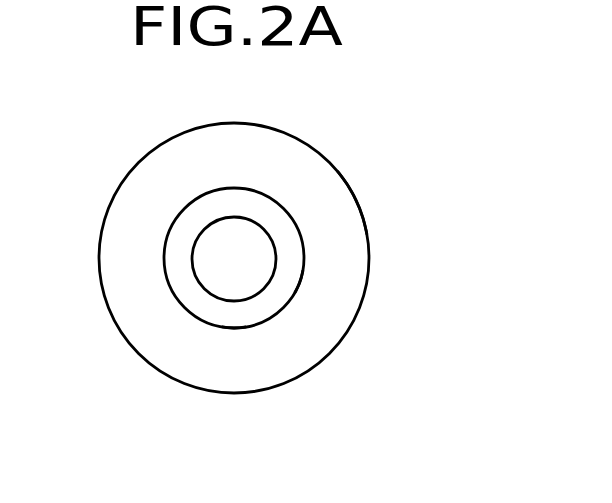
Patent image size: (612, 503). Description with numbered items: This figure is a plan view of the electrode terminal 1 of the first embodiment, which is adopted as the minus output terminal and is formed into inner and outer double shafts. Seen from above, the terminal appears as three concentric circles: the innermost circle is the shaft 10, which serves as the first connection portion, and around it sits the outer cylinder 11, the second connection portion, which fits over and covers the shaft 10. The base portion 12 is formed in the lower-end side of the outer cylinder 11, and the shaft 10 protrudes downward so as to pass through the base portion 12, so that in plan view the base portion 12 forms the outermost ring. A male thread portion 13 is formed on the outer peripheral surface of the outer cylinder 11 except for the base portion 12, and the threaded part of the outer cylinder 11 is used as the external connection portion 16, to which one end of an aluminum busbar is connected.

The electrode terminal 1 is at (368, 192).
The shaft 10 is at (220, 217).
The outer cylinder 11 is at (166, 243).
The base portion 12 is at (135, 352).
The male thread portion 13 is at (238, 329).
The external connection portion 16 is at (302, 285).